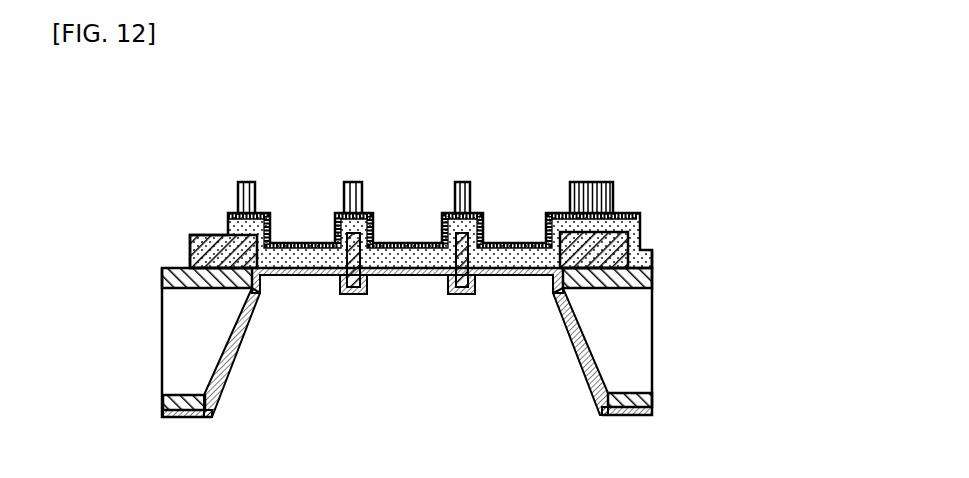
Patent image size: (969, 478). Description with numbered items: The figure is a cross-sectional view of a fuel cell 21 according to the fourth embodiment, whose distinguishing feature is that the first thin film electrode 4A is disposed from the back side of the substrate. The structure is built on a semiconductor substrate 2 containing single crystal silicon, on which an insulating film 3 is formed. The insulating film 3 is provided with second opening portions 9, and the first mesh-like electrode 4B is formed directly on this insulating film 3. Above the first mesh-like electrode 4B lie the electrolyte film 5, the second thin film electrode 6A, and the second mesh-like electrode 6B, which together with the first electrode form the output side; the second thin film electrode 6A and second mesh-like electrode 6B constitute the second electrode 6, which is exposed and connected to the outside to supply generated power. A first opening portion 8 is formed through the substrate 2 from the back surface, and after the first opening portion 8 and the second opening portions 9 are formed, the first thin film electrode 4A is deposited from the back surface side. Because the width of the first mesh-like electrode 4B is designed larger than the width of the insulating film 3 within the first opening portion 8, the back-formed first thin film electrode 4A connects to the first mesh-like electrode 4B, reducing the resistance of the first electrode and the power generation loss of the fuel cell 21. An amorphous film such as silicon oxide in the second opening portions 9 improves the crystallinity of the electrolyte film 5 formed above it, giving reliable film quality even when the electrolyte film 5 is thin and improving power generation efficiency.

The fuel cell 21 is at (156, 322).
The semiconductor substrate 2 is at (643, 338).
The insulating film 3 is at (652, 280).
The first thin film electrode 4A is at (218, 378).
The first mesh-like electrode 4B is at (190, 235).
The electrolyte film 5 is at (630, 240).
The second electrode 6 is at (722, 115).
The second thin film electrode 6A is at (625, 210).
The second mesh-like electrode 6B is at (613, 182).
The first opening portion 8 is at (535, 328).
The second opening portions 9 is at (405, 273).